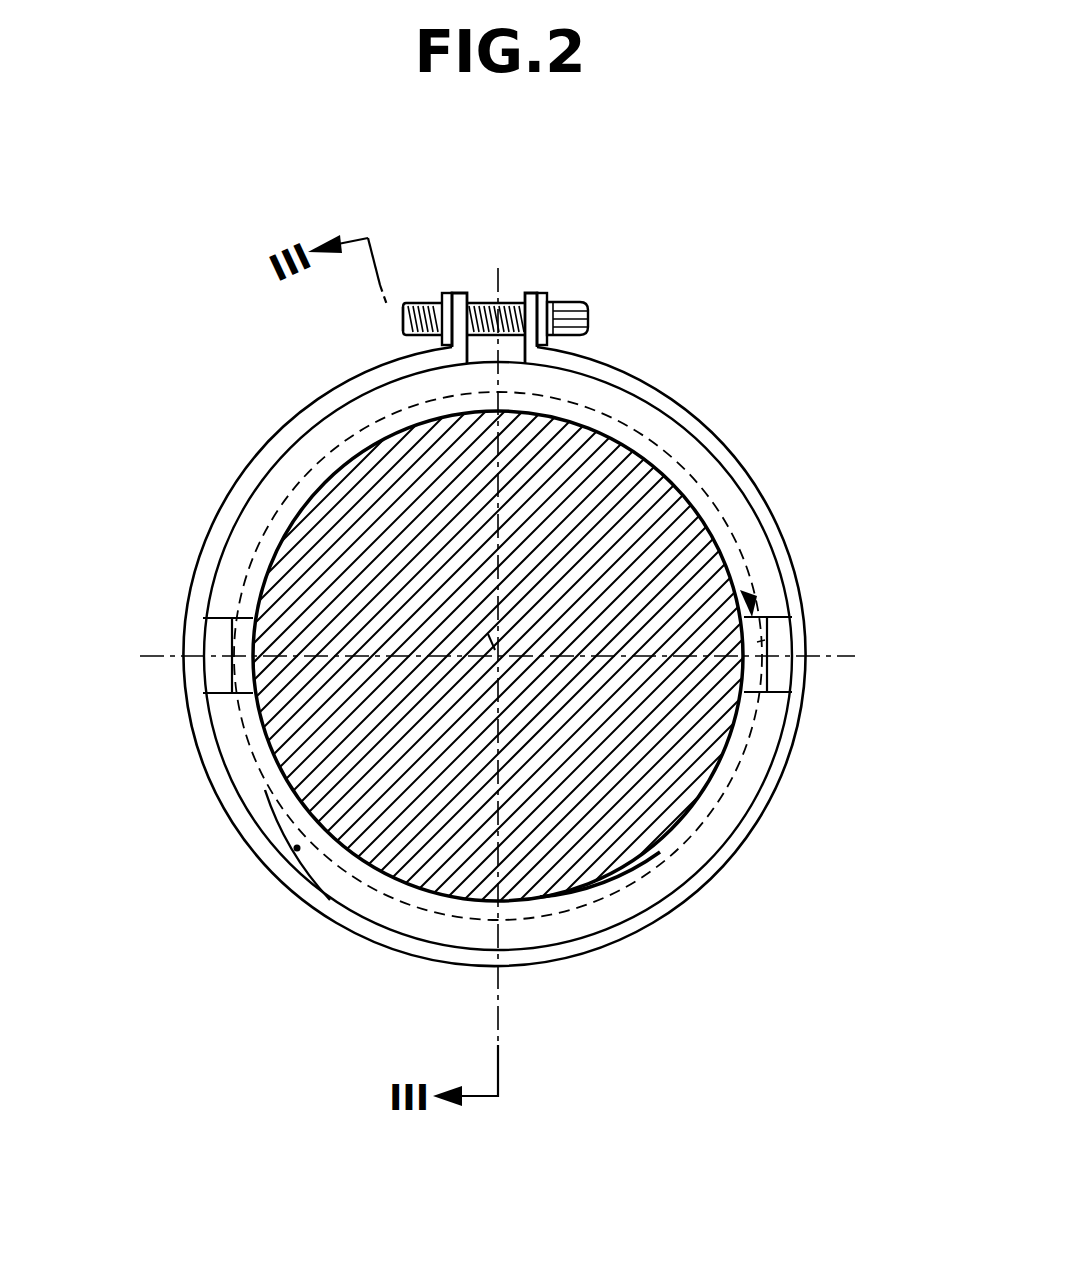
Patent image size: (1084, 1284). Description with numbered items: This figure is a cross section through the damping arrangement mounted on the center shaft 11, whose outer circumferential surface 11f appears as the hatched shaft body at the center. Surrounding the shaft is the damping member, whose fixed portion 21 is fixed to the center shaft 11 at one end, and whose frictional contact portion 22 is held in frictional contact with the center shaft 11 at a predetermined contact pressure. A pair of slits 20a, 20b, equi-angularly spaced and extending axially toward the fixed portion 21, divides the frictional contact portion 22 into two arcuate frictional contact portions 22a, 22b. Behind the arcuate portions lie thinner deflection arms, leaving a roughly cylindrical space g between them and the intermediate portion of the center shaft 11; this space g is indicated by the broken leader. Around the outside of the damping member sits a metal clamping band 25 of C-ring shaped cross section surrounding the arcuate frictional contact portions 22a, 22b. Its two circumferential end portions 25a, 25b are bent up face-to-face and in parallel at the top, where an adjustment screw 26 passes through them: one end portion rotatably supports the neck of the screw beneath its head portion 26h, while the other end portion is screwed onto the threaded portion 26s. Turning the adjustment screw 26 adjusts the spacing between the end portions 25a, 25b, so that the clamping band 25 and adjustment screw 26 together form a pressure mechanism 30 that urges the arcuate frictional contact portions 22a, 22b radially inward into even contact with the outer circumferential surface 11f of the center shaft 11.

The center shaft 11 is at (680, 785).
The outer circumferential surface 11f is at (650, 860).
The slit 20a is at (772, 684).
The slit 20b is at (210, 694).
The fixed portion 21 is at (213, 633).
The frictional contact portion 22 is at (746, 482).
The arcuate frictional contact portion 22a is at (292, 470).
The arcuate frictional contact portion 22b is at (297, 852).
The clamping band 25 is at (695, 410).
The circumferential end portion 25a is at (533, 293).
The circumferential end portion 25b is at (450, 293).
The adjustment screw 26 is at (484, 303).
The head portion 26h is at (568, 302).
The threaded portion 26s is at (404, 320).
The pressure mechanism 30 is at (630, 306).
The space g is at (757, 642).